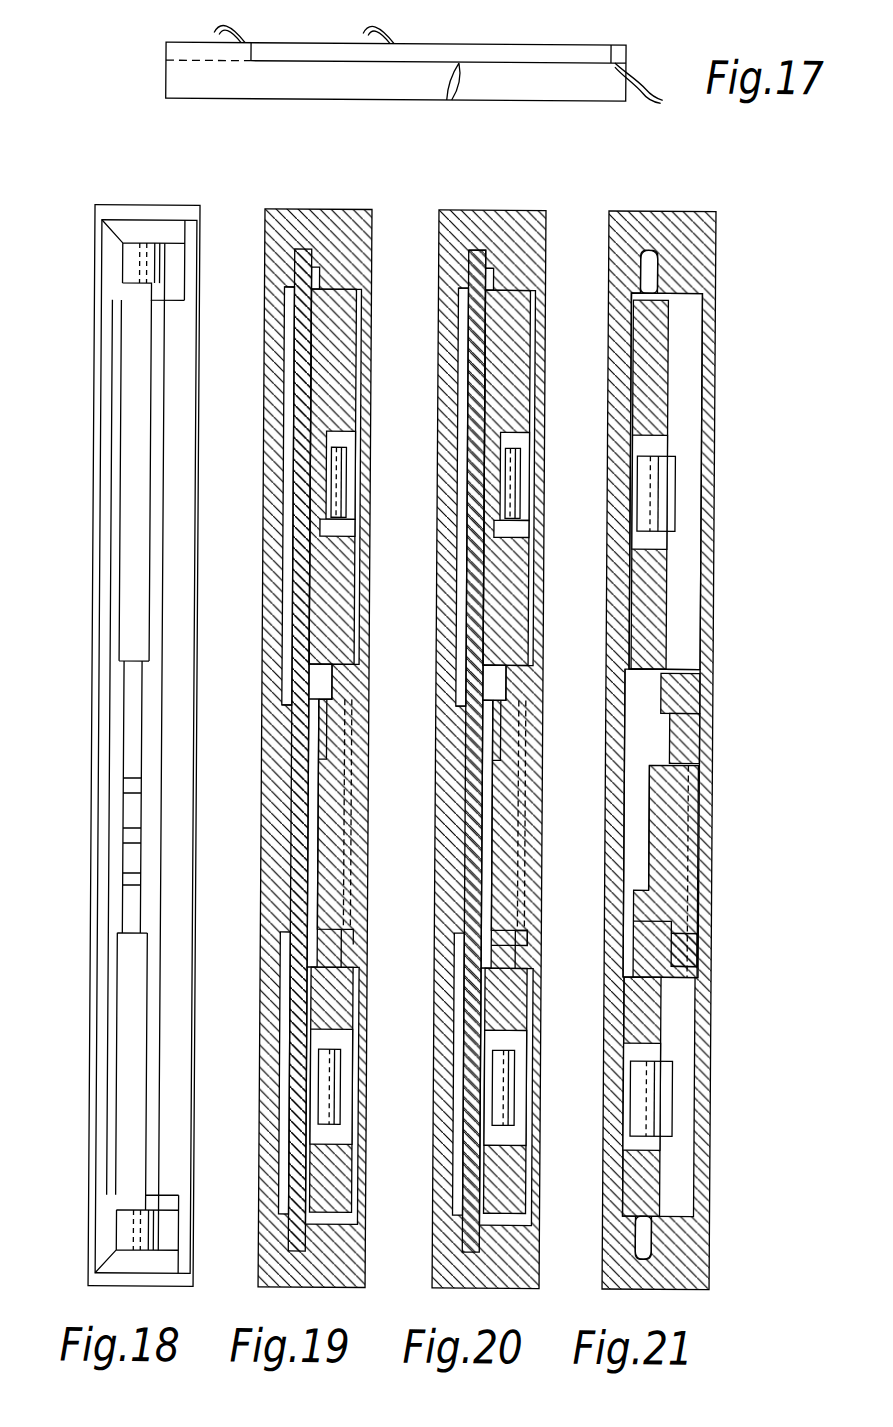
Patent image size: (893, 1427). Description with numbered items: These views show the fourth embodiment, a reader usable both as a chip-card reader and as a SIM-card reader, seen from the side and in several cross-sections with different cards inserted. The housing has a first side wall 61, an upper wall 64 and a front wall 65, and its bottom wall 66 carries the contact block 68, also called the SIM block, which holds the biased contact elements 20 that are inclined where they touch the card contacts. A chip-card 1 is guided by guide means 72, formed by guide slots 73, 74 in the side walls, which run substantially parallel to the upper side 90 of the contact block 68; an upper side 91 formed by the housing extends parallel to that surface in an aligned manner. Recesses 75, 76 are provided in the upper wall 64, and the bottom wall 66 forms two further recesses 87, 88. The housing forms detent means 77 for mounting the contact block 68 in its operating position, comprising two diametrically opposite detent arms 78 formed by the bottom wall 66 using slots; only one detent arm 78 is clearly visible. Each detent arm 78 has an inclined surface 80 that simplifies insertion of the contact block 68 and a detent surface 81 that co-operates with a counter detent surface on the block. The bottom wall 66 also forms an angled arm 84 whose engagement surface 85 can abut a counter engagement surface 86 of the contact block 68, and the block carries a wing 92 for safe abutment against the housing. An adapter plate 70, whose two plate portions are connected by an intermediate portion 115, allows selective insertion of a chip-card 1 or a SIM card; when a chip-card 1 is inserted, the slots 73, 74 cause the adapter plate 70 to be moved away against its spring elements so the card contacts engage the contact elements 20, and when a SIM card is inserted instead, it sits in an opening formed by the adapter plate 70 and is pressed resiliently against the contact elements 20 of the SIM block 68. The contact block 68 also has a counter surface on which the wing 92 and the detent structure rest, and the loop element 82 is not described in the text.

In FIG. 19, the chip-card 1 is at (300, 386).
In FIG. 20, the chip-card 1 is at (470, 1088).
In FIG. 17, the contact elements 20 is at (246, 26).
In FIG. 18, the first side wall 61 is at (144, 207).
In FIG. 19, the upper wall 64 is at (280, 830).
In FIG. 18, the front wall 65 is at (106, 268).
In FIG. 21, the bottom wall 66 is at (712, 474).
In FIG. 17, the contact block 68 is at (372, 80).
In FIG. 19, the contact block 68 is at (342, 872).
In FIG. 20, the contact block 68 is at (512, 814).
In FIG. 19, the adapter plate 70 is at (330, 336).
In FIG. 21, the adapter plate 70 is at (672, 386).
In FIG. 20, the guide means 72 is at (520, 336).
In FIG. 21, the guide means 72 is at (640, 292).
In FIG. 21, the guide slot 73 is at (660, 262).
In FIG. 21, the guide slot 74 is at (655, 1250).
In FIG. 19, the recess 75 is at (292, 1084).
In FIG. 19, the recess 76 is at (292, 486).
In FIG. 21, the detent means 77 is at (712, 940).
In FIG. 21, the detent arm 78 is at (700, 966).
In FIG. 21, the inclined surface 80 is at (690, 936).
In FIG. 21, the detent surface 81 is at (668, 920).
In FIG. 17, the loop 82 is at (452, 100).
In FIG. 20, the loop 82 is at (522, 932).
In FIG. 21, the angled arm 84 is at (668, 724).
In FIG. 21, the engagement surface 85 is at (676, 752).
In FIG. 21, the counter engagement surface 86 is at (650, 736).
In FIG. 21, the recess 87 is at (698, 338).
In FIG. 21, the recess 88 is at (680, 1038).
In FIG. 17, the upper side 90 is at (512, 42).
In FIG. 21, the upper side 90 is at (660, 822).
In FIG. 21, the upper side 91 is at (660, 664).
In FIG. 19, the wing 92 is at (346, 742).
In FIG. 20, the intermediate portion 115 is at (500, 962).